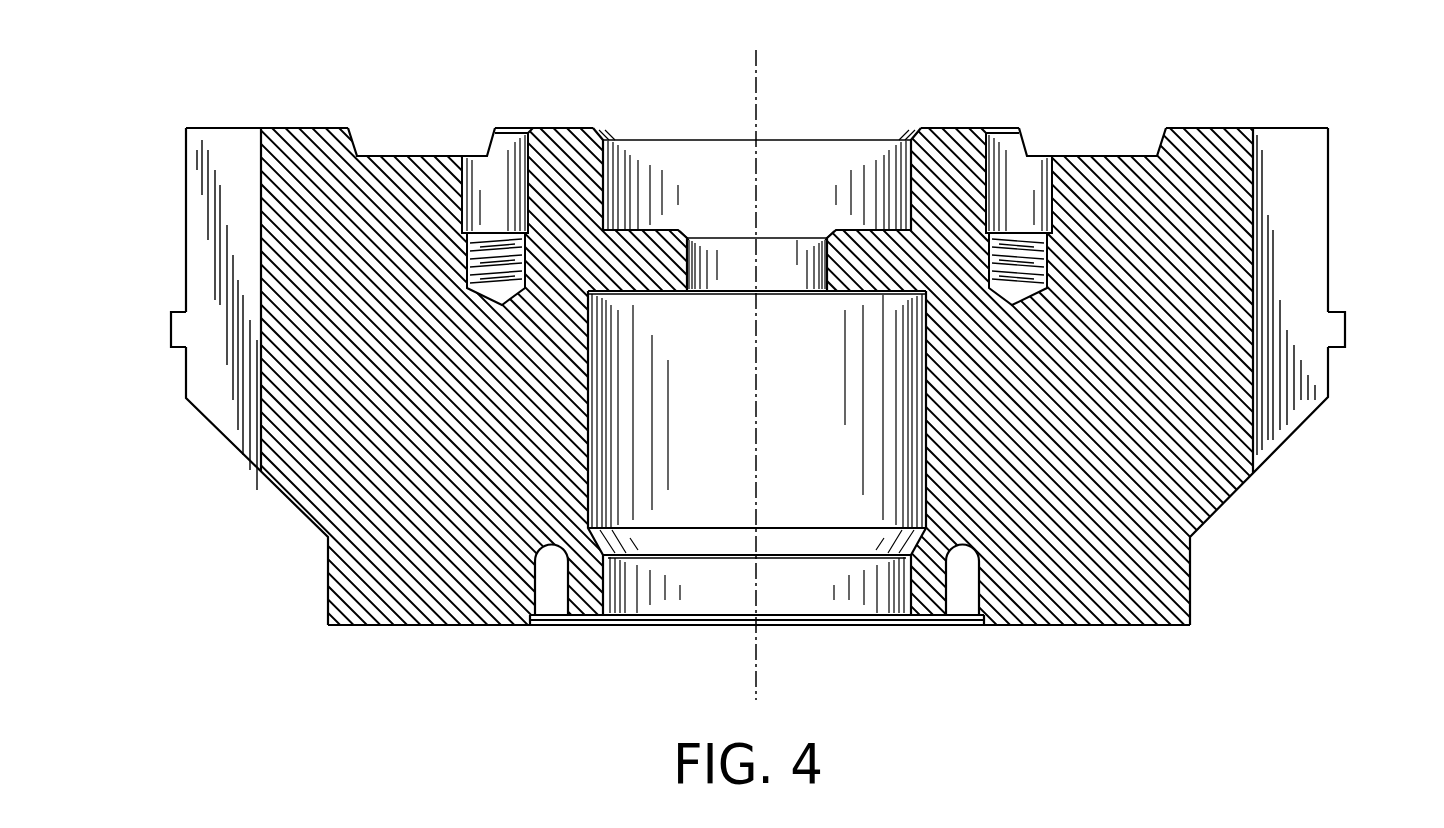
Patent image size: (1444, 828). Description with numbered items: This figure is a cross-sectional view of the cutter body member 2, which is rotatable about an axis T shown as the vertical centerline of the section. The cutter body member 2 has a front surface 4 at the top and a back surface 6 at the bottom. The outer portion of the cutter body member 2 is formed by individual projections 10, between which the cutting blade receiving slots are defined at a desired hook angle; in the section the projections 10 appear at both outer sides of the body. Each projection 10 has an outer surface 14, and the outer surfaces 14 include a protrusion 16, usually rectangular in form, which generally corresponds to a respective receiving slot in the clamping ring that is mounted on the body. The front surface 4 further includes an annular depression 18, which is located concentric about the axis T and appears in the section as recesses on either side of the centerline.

The cutter body member 2 is at (1200, 49).
The front surface 4 is at (290, 127).
The back surface 6 is at (383, 627).
The projections 10 is at (215, 230).
The outer surface 14 is at (186, 154).
The protrusion 16 is at (172, 326).
The annular depression 18 is at (430, 139).
The axis T is at (760, 62).